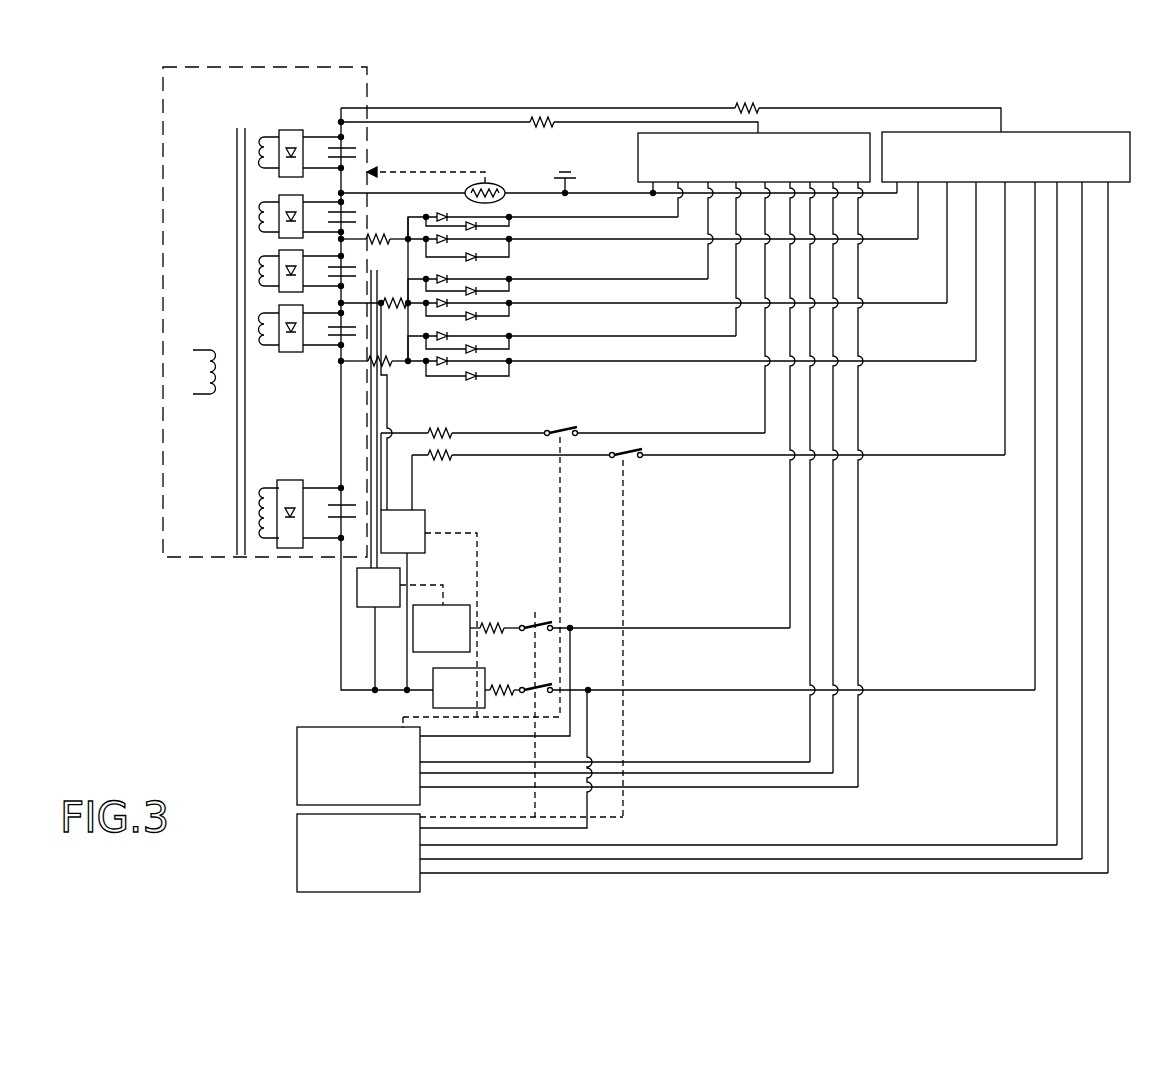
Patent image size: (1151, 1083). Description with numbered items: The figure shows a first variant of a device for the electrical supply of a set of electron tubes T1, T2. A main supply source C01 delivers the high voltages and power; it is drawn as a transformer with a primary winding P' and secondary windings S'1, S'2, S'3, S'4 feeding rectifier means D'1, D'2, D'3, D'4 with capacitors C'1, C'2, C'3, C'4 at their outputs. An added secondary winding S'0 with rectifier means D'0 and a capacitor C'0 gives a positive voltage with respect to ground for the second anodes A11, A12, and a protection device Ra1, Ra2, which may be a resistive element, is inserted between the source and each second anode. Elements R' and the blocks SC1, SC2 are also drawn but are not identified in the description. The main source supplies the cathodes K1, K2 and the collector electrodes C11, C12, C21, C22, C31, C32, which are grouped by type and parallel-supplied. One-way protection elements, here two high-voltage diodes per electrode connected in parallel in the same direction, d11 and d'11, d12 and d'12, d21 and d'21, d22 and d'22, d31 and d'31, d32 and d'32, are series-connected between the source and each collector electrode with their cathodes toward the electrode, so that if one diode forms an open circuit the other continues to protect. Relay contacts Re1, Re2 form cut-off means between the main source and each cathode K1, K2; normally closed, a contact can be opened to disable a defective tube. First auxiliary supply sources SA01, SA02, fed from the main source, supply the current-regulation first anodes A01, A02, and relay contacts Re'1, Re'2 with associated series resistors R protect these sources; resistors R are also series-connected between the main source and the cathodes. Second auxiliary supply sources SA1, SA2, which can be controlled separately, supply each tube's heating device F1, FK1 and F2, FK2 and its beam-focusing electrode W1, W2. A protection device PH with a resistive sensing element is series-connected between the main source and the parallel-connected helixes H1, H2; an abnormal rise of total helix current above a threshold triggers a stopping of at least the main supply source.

The main supply source C01 is at (162, 142).
The primary winding P' is at (199, 356).
The secondary winding S'0 is at (253, 133).
The secondary winding S'1 is at (262, 203).
The secondary winding S'2 is at (262, 260).
The secondary winding S'3 is at (262, 347).
The secondary winding S'4 is at (261, 495).
The rectifier means D'0 is at (309, 131).
The rectifier means D'1 is at (311, 205).
The rectifier means D'2 is at (311, 262).
The rectifier means D'3 is at (311, 320).
The rectifier means D'4 is at (310, 500).
The capacitor C'0 is at (335, 124).
The capacitor C'1 is at (356, 209).
The capacitor C'2 is at (356, 261).
The capacitor C'3 is at (329, 351).
The capacitor C'4 is at (327, 519).
The resistor R' is at (376, 285).
The series resistor R is at (495, 550).
The one-way protection element d11 is at (446, 212).
The one-way protection element d'11 is at (504, 212).
The one-way protection element d12 is at (432, 258).
The one-way protection element d'12 is at (511, 250).
The one-way protection element d21 is at (448, 275).
The one-way protection element d'21 is at (511, 280).
The one-way protection element d22 is at (430, 318).
The one-way protection element d'22 is at (511, 317).
The one-way protection element d31 is at (446, 332).
The one-way protection element d'31 is at (511, 347).
The one-way protection element d32 is at (438, 376).
The one-way protection element d'32 is at (505, 383).
The protection device PH is at (498, 182).
The protection device Ra1 is at (532, 122).
The protection device Ra2 is at (748, 108).
The relay contact Re'1 is at (655, 561).
The relay contact Re'2 is at (808, 633).
The high-voltage relay contact Re1 is at (526, 618).
The high-voltage relay contact Re2 is at (533, 688).
The first auxiliary supply source SA01 is at (400, 629).
The first auxiliary supply source SA02 is at (429, 613).
The control circuit SC1 is at (441, 628).
The control circuit SC2 is at (459, 688).
The second auxiliary supply source SA1 is at (577, 761).
The second auxiliary supply source SA2 is at (702, 853).
The electron tube T1 is at (754, 460).
The electron tube T2 is at (1006, 502).
The second anode A11 is at (758, 146).
The second anode A12 is at (1004, 146).
The helix H1 is at (652, 181).
The collector electrode C11 is at (679, 191).
The collector electrode C21 is at (707, 222).
The collector electrode C31 is at (735, 251).
The first anode A01 is at (762, 299).
The cathode K1 is at (788, 397).
The heating device F1 is at (810, 464).
The heating device FK1 is at (833, 469).
The beam-focusing electrode W1 is at (859, 476).
The helix H2 is at (895, 179).
The collector electrode C12 is at (920, 202).
The collector electrode C22 is at (947, 234).
The collector electrode C32 is at (974, 263).
The first anode A02 is at (1002, 310).
The cathode K2 is at (1033, 428).
The heating device F2 is at (1055, 505).
The heating device FK2 is at (1081, 512).
The beam-focusing electrode W2 is at (1108, 519).